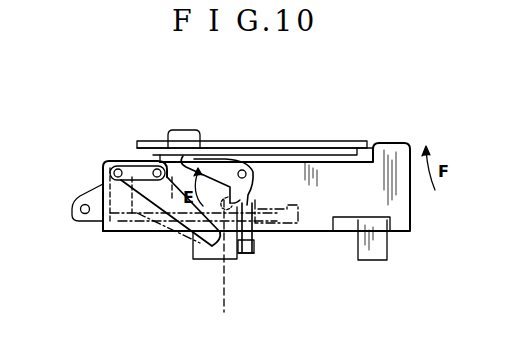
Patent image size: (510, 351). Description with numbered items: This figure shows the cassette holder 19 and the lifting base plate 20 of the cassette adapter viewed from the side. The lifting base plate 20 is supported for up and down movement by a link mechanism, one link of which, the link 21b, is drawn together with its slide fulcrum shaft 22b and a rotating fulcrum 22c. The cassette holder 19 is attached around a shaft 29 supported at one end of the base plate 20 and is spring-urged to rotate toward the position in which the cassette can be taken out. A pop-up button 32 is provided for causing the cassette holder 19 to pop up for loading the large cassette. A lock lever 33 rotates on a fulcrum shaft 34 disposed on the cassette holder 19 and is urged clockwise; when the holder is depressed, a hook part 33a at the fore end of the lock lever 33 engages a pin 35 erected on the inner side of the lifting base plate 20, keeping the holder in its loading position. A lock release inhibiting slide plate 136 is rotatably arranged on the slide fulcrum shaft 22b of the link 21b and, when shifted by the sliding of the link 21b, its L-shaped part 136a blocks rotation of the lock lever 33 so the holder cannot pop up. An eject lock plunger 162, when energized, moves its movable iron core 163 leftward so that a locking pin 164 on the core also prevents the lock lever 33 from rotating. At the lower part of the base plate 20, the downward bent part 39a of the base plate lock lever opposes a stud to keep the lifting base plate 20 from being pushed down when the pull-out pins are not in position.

The cassette holder 19 is at (97, 187).
The lifting base plate 20 is at (393, 152).
The link 21b is at (190, 243).
The slide fulcrum shaft 22b is at (116, 168).
The rotating fulcrum 22c is at (138, 167).
The shaft 29 is at (80, 217).
The pop-up button 32 is at (185, 130).
The lock lever 33 is at (226, 164).
The hook part 33a is at (241, 257).
The fulcrum shaft 34 is at (245, 170).
The pin 35 is at (227, 269).
The bent part 39a is at (380, 245).
The lock release inhibiting slide plate 136 is at (113, 233).
The L-shaped part 136a is at (293, 203).
The eject lock plunger 162 is at (215, 260).
The movable iron core 163 is at (254, 253).
The locking pin 164 is at (255, 243).